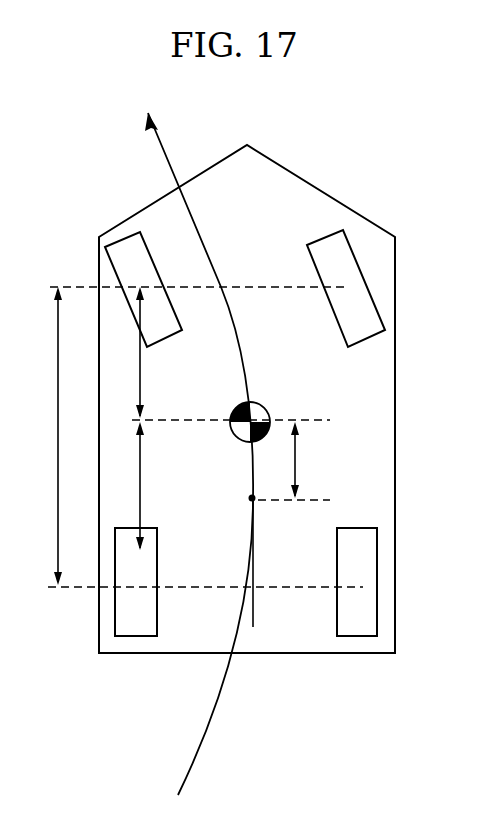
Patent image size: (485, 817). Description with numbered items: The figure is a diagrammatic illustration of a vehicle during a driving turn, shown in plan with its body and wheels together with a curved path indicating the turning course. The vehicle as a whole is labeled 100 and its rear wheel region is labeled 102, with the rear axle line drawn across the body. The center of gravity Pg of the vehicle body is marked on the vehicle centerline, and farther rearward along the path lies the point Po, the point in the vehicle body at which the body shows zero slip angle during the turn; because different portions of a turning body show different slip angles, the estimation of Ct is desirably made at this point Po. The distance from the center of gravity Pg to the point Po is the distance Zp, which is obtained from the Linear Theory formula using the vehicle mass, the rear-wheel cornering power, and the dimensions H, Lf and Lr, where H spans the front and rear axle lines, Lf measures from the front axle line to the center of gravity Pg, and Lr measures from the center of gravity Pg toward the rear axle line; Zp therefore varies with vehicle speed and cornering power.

The vehicle 100 is at (257, 286).
The rear axle 102 is at (303, 590).
The center of gravity Pg is at (242, 436).
The point of zero slip angle Po is at (250, 499).
The vehicle dimension H is at (46, 436).
The vehicle dimension Lf is at (153, 352).
The vehicle dimension Lr is at (153, 486).
The distance Zp is at (309, 460).